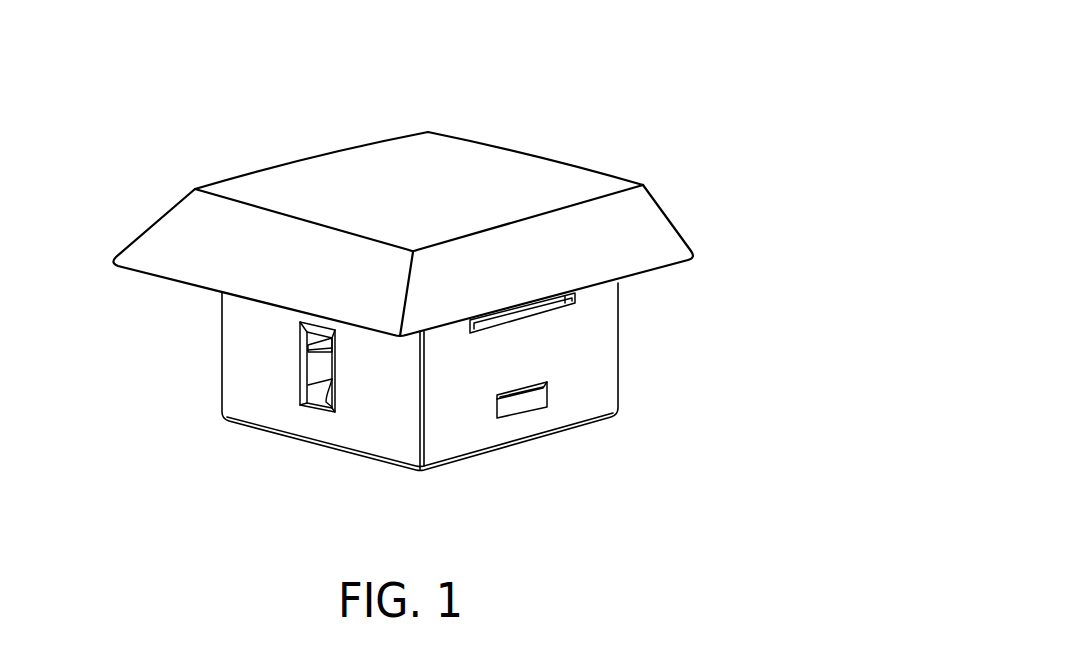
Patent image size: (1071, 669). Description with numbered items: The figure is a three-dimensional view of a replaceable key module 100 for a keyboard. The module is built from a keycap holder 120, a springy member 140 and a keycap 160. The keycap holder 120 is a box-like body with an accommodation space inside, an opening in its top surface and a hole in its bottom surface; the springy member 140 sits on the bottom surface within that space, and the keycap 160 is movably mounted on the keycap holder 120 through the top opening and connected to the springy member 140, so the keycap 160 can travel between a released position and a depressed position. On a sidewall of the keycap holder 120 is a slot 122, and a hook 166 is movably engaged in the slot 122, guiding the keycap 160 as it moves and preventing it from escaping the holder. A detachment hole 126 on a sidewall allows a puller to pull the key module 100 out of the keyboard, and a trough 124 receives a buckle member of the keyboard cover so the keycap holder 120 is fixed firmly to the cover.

The replaceable key module 100 is at (763, 70).
The keycap 160 is at (358, 160).
The keycap holder 120 is at (600, 407).
The slot 122 is at (305, 375).
The hook 166 is at (300, 323).
The springy member 140 is at (320, 410).
The detachment hole 126 is at (560, 307).
The trough 124 is at (523, 403).